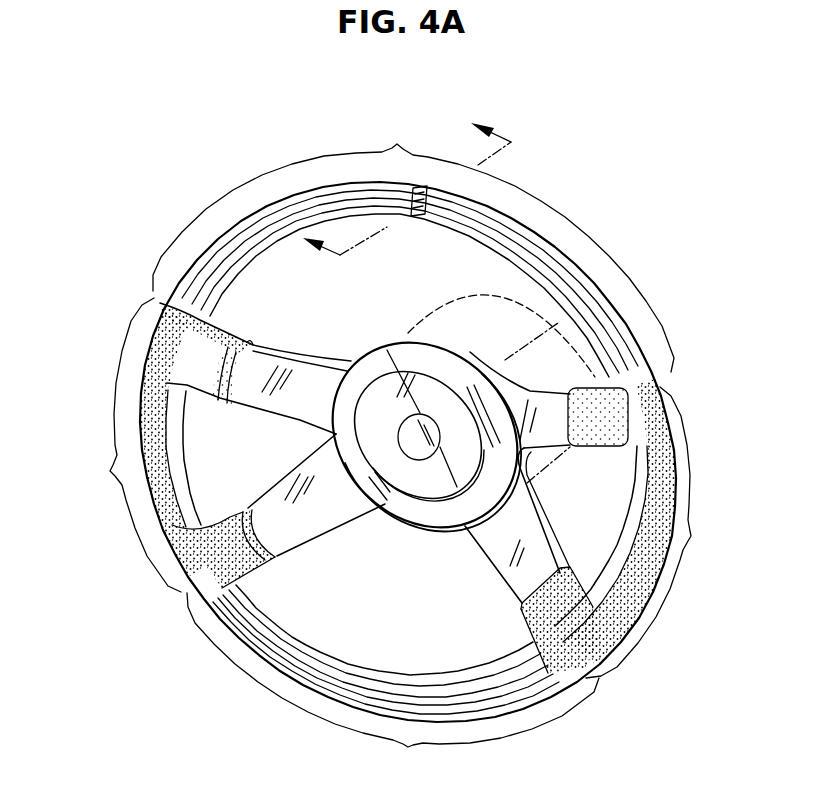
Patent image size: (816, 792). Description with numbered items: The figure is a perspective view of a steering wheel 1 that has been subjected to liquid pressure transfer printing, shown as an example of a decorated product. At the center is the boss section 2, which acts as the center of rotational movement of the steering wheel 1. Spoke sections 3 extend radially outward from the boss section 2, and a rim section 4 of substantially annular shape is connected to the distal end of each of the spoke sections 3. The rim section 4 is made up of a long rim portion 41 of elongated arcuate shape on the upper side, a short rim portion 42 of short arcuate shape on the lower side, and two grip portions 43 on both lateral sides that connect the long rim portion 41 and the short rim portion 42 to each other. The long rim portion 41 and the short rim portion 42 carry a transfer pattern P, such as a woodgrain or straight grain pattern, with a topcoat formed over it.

The steering wheel 1 is at (398, 437).
The boss section 2 is at (432, 482).
The spoke sections 3 is at (267, 401).
The rim section 4 is at (408, 452).
The long rim portion 41 is at (413, 241).
The short rim portion 42 is at (393, 688).
The grip portions 43 is at (398, 488).
The transfer pattern P is at (236, 238).